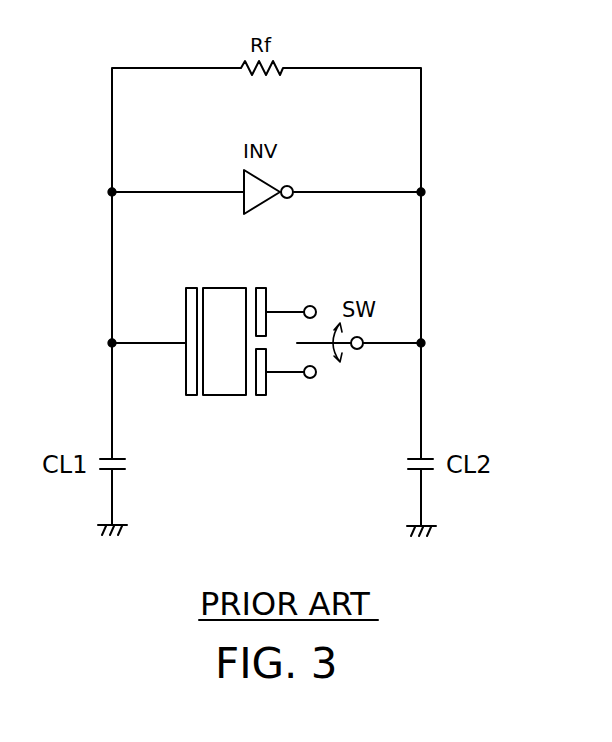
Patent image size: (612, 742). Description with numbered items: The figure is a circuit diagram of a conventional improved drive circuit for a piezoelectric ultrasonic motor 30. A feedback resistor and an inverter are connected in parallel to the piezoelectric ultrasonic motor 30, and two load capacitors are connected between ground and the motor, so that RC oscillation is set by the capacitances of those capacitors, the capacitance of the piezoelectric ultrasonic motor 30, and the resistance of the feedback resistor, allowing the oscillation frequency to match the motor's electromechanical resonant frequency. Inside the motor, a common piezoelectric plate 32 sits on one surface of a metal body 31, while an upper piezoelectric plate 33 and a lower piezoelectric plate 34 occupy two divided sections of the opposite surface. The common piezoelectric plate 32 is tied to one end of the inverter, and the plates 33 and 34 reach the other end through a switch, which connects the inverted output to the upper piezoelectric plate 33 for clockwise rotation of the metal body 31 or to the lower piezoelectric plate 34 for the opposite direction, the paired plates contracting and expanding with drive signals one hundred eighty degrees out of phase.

The piezoelectric ultrasonic motor 30 is at (240, 379).
The metal body 31 is at (220, 395).
The common piezoelectric plate 32 is at (190, 288).
The upper piezoelectric plate 33 is at (263, 288).
The lower piezoelectric plate 34 is at (261, 395).